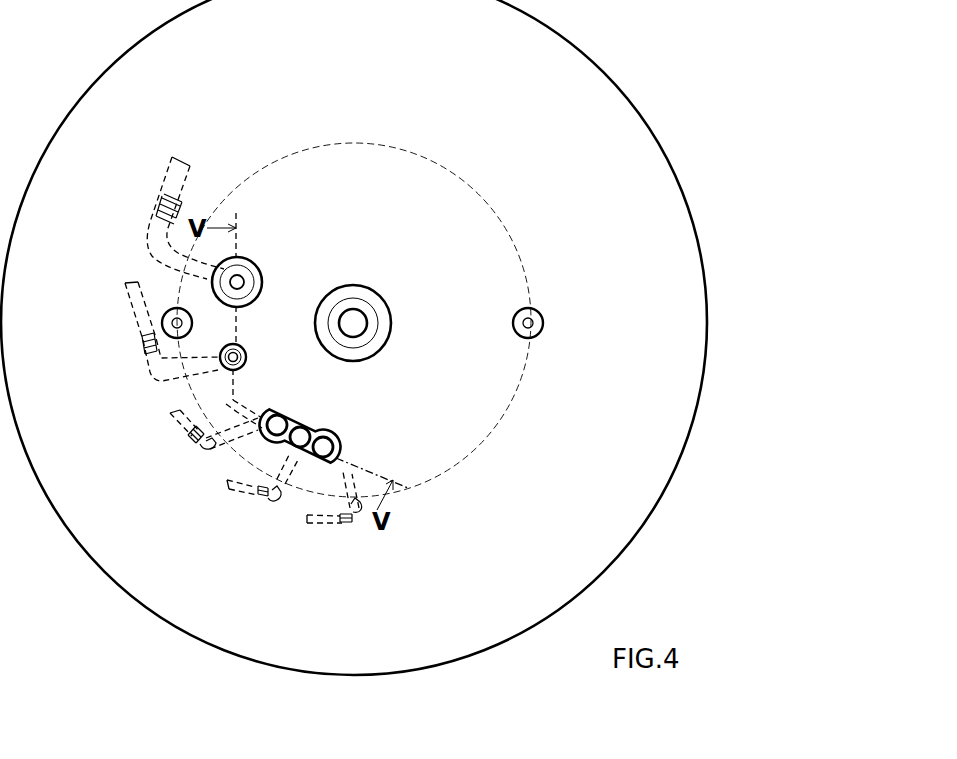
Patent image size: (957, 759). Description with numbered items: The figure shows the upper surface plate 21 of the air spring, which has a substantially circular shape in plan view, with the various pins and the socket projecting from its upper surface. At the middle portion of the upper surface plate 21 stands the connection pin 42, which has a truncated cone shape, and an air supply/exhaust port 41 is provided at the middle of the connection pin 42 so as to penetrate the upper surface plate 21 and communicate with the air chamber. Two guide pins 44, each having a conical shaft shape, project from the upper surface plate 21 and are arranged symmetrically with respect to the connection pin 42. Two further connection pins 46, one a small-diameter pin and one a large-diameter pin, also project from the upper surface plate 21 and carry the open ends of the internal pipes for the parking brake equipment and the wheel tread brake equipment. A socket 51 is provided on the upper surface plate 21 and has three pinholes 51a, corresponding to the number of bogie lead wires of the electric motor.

The upper surface plate 21 is at (593, 63).
The air supply/exhaust port 41 is at (352, 335).
The connection pin 42 is at (373, 291).
The guide pin 44 is at (162, 322).
The connection pin 46 is at (258, 270).
The socket 51 is at (329, 414).
The pinhole 51a is at (322, 437).